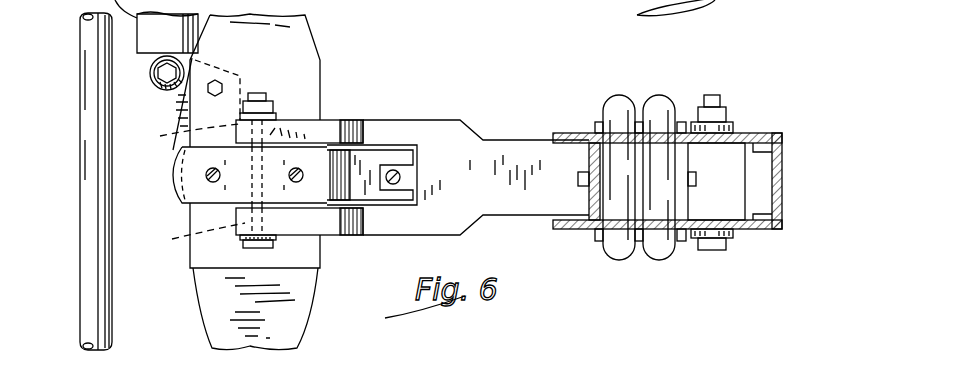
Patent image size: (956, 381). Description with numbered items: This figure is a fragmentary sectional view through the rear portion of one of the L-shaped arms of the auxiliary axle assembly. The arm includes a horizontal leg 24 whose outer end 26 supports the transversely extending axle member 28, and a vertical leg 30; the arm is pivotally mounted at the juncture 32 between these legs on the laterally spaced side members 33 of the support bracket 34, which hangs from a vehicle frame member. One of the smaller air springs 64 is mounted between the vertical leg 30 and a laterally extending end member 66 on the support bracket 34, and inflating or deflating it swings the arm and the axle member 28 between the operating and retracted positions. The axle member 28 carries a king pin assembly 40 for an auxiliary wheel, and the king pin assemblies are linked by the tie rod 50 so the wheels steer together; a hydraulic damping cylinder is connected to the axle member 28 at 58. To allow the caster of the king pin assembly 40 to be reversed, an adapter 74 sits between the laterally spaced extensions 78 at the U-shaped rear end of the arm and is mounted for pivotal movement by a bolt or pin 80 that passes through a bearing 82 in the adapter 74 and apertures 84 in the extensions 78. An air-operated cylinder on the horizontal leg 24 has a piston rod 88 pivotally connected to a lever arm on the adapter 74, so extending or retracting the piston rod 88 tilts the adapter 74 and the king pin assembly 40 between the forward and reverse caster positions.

The horizontal leg 24 is at (505, 145).
The outer end 26 is at (378, 100).
The axle member 28 is at (312, 74).
The vertical leg 30 is at (690, 166).
The juncture 32 is at (705, 250).
The side members 33 is at (766, 133).
The support bracket 34 is at (788, 231).
The king pin assembly 40 is at (375, 152).
The tie rod 50 is at (85, 78).
The cylinder connection point 58 is at (162, 78).
The air springs 64 is at (620, 100).
The end member 66 is at (590, 226).
The adapter 74 is at (173, 200).
The extensions 78 is at (326, 120).
The bolt or pin 80 is at (243, 245).
The bearing 82 is at (270, 188).
The apertures 84 is at (185, 185).
The piston rod 88 is at (402, 177).